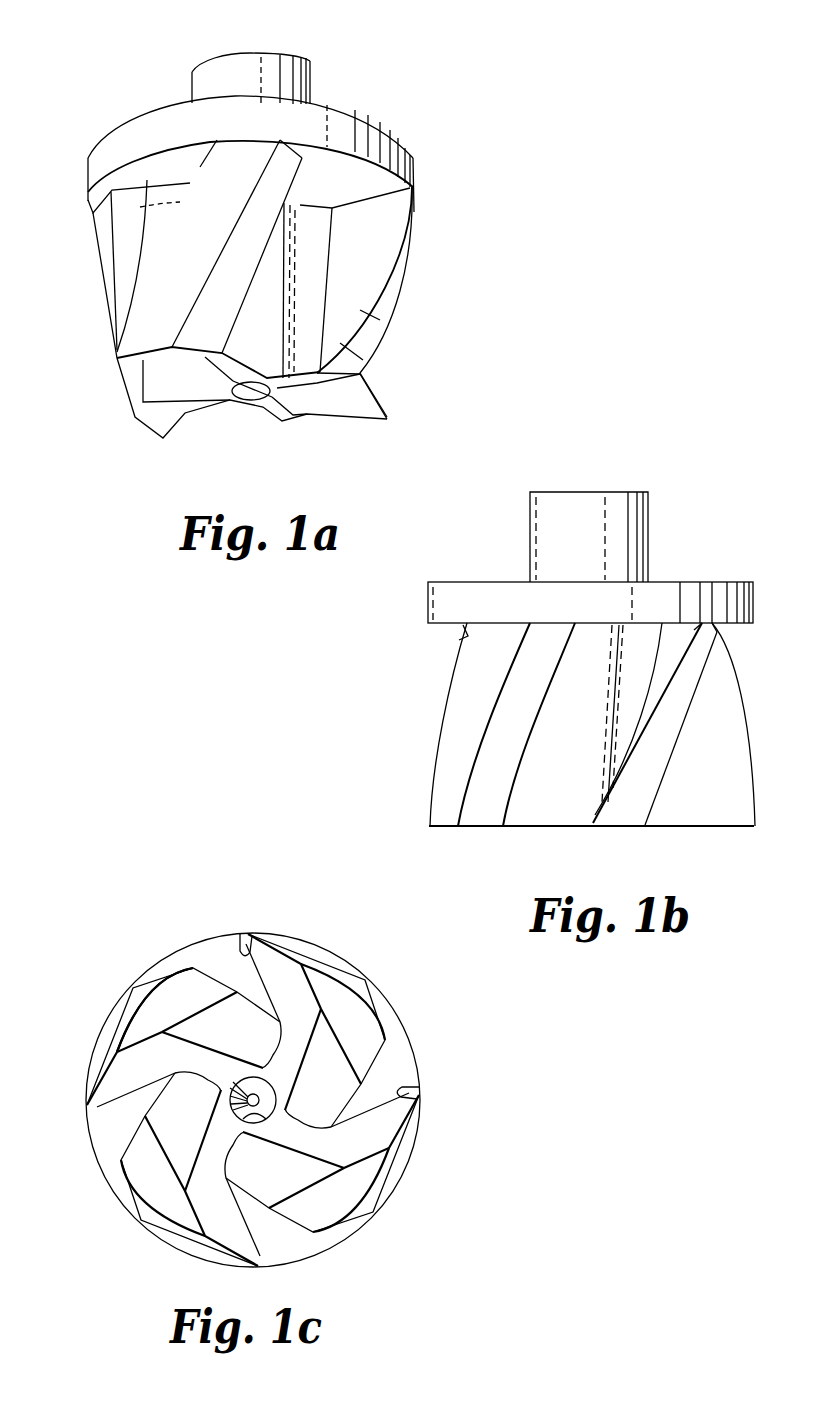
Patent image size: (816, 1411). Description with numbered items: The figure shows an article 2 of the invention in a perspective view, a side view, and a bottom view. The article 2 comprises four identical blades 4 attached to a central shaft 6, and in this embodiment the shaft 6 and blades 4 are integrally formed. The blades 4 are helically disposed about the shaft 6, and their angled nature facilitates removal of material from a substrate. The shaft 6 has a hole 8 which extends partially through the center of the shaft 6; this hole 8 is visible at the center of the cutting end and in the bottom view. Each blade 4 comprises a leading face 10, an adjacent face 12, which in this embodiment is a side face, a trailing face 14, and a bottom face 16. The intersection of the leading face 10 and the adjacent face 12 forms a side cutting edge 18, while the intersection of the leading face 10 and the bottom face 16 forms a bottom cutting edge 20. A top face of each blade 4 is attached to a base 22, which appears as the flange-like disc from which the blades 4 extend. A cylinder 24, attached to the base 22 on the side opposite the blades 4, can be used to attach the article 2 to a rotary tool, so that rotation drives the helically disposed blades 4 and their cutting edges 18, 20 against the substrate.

In FIG. 1A, the article 2 is at (423, 103).
In FIG. 1B, the article 2 is at (742, 520).
In FIG. 1C, the article 2 is at (290, 1094).
In FIG. 1A, the blades 4 is at (154, 337).
In FIG. 1B, the blades 4 is at (614, 815).
In FIG. 1C, the blades 4 is at (298, 1040).
In FIG. 1A, the central shaft 6 is at (252, 400).
In FIG. 1C, the central shaft 6 is at (233, 1062).
In FIG. 1A, the hole 8 is at (263, 403).
In FIG. 1C, the hole 8 is at (257, 1112).
In FIG. 1A, the leading face 10 is at (355, 285).
In FIG. 1B, the leading face 10 is at (678, 645).
In FIG. 1A, the adjacent face 12 is at (162, 272).
In FIG. 1B, the adjacent face 12 is at (445, 742).
In FIG. 1C, the adjacent face 12 is at (402, 1143).
In FIG. 1A, the trailing face 14 is at (205, 303).
In FIG. 1B, the trailing face 14 is at (485, 812).
In FIG. 1C, the trailing face 14 is at (362, 1178).
In FIG. 1A, the bottom face 16 is at (207, 357).
In FIG. 1A, the side cutting edge 18 is at (110, 213).
In FIG. 1B, the side cutting edge 18 is at (588, 810).
In FIG. 1A, the bottom cutting edge 20 is at (332, 370).
In FIG. 1C, the bottom cutting edge 20 is at (240, 945).
In FIG. 1A, the base 22 is at (363, 128).
In FIG. 1B, the base 22 is at (703, 590).
In FIG. 1A, the cylinder 24 is at (225, 66).
In FIG. 1B, the cylinder 24 is at (578, 500).